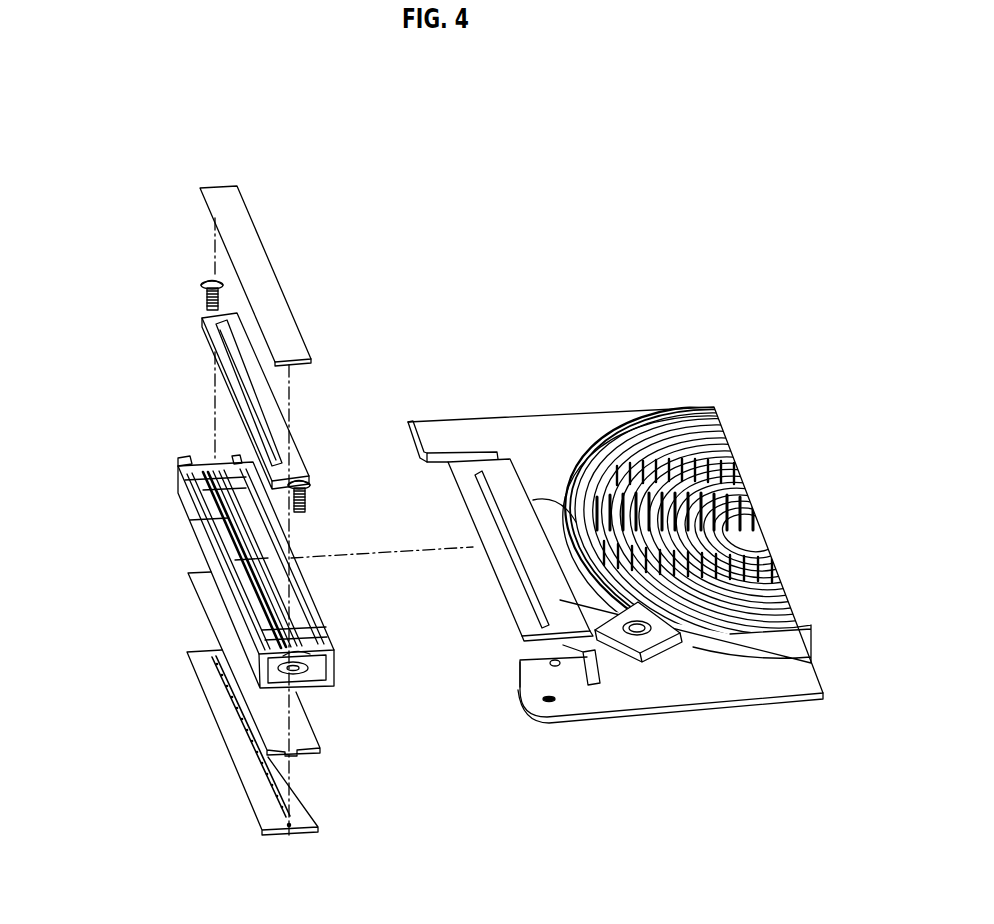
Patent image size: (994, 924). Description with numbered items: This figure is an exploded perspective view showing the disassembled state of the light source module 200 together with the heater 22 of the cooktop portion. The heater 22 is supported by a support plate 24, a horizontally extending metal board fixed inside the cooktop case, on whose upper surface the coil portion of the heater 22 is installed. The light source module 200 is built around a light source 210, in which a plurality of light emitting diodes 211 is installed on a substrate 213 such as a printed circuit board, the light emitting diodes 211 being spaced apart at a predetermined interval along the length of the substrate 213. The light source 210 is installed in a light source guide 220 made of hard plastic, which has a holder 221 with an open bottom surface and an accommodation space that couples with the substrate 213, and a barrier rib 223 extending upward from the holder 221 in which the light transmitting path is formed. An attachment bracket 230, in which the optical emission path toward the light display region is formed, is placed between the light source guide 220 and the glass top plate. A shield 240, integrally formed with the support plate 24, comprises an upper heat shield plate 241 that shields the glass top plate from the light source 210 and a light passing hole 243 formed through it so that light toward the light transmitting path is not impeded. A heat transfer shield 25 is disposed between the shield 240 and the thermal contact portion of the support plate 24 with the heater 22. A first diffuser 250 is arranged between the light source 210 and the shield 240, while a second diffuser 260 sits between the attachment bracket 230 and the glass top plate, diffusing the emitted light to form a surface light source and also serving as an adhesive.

The light source module 200 is at (441, 212).
The heater 22 is at (658, 458).
The support plate 24 is at (720, 678).
The heat transfer shield 25 is at (590, 603).
The light source 210 is at (104, 767).
The light emitting diodes 211 is at (277, 762).
The substrate 213 is at (277, 797).
The light source guide 220 is at (104, 562).
The holder 221 is at (205, 560).
The barrier rib 223 is at (240, 563).
The attachment bracket 230 is at (203, 333).
The shield 240 is at (567, 798).
The upper heat shield plate 241 is at (568, 625).
The light passing hole 243 is at (523, 582).
The first diffuser 250 is at (217, 631).
The second diffuser 260 is at (220, 197).